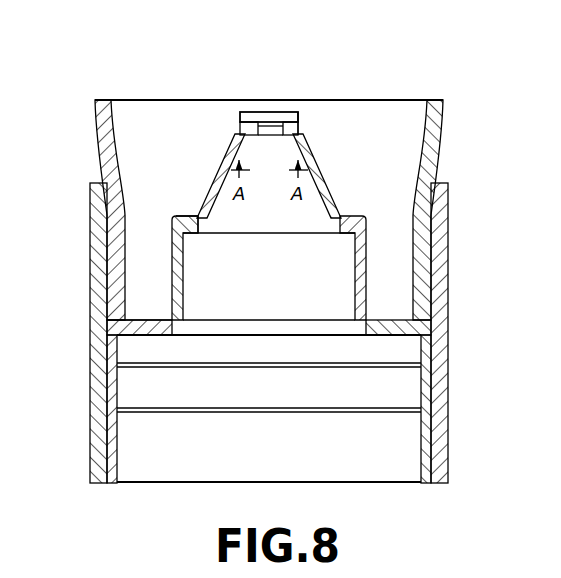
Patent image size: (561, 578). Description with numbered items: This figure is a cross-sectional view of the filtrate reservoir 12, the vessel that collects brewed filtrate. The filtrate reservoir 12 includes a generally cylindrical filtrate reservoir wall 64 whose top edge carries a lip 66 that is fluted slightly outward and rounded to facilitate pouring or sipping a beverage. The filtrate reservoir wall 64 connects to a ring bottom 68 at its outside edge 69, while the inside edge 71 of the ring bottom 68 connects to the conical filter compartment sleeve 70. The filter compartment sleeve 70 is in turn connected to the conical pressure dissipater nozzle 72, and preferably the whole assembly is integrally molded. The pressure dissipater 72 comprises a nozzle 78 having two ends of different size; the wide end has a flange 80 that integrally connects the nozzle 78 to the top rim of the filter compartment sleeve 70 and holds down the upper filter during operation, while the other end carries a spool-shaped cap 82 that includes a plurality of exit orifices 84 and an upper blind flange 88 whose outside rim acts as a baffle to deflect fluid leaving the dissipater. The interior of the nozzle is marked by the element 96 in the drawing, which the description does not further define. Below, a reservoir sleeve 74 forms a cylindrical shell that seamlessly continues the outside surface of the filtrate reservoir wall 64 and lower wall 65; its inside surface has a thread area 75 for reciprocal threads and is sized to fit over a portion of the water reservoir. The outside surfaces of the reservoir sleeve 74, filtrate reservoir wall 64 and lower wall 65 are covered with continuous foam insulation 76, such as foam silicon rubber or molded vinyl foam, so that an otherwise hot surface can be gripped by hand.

The filtrate reservoir 12 is at (92, 137).
The lip 66 is at (449, 105).
The foam insulation 76 is at (88, 202).
The filtrate reservoir wall 64 is at (412, 223).
The lower wall 65 is at (116, 450).
The ring bottom 68 is at (146, 315).
The outside edge 69 is at (123, 324).
The filter compartment sleeve 70 is at (186, 275).
The inside edge 71 is at (370, 315).
The conical pressure dissipater nozzle 72 is at (306, 116).
The reservoir sleeve 74 is at (420, 434).
The thread area 75 is at (167, 407).
The nozzle 78 is at (340, 176).
The flange 80 is at (182, 210).
The spool-shaped cap 82 is at (280, 106).
The exit orifices 84 is at (265, 119).
The upper blind flange 88 is at (298, 106).
The passage 96 is at (266, 136).